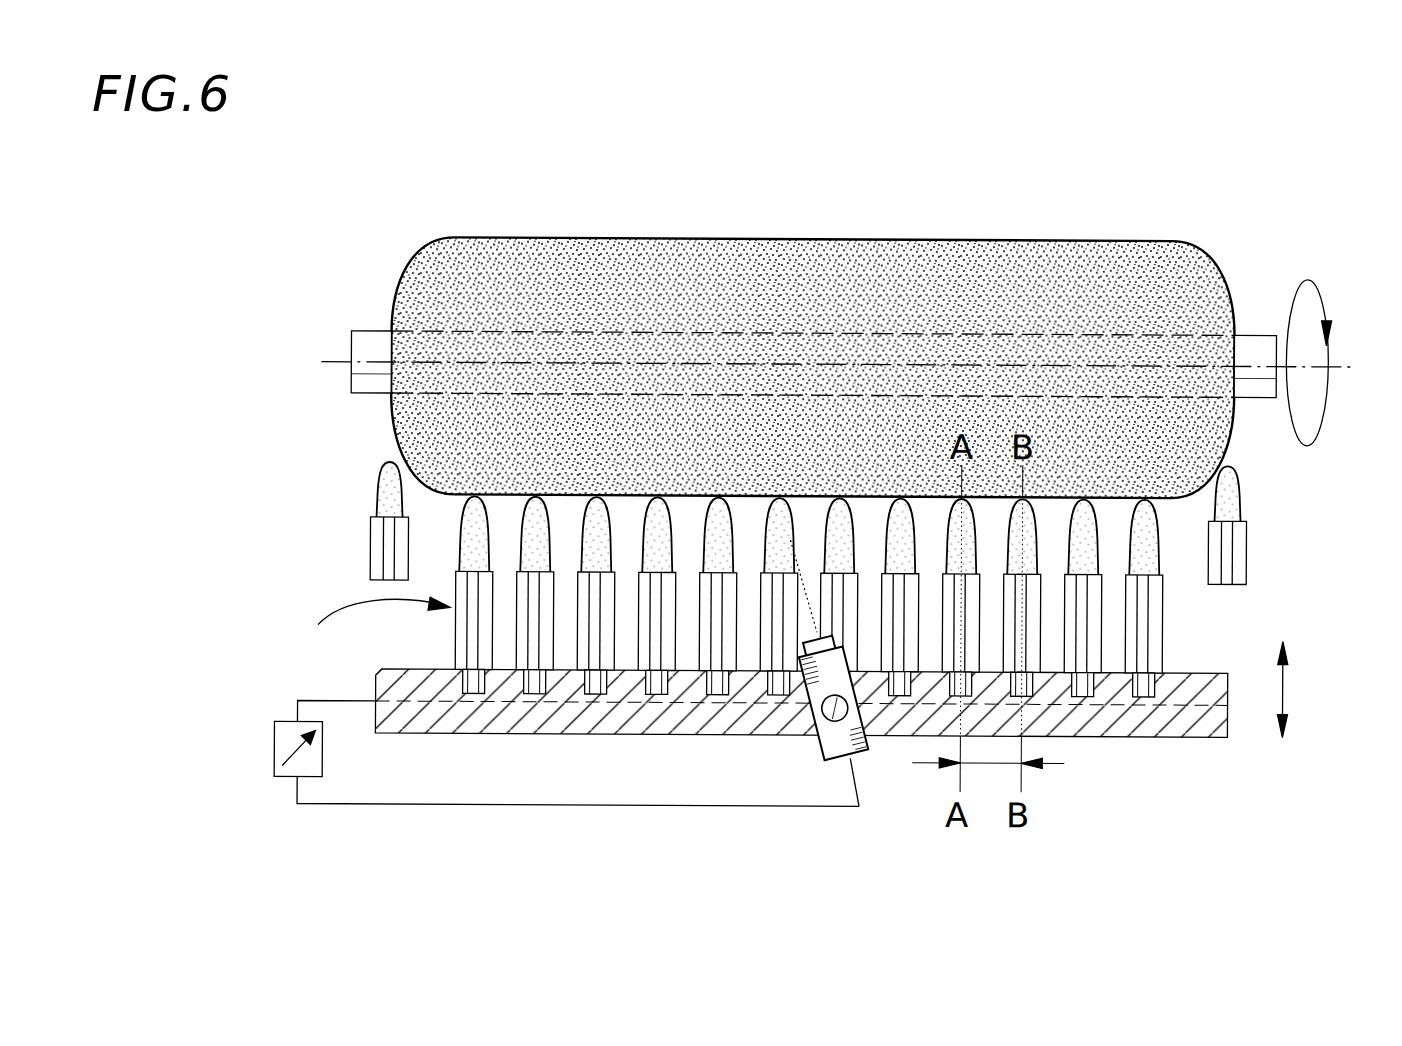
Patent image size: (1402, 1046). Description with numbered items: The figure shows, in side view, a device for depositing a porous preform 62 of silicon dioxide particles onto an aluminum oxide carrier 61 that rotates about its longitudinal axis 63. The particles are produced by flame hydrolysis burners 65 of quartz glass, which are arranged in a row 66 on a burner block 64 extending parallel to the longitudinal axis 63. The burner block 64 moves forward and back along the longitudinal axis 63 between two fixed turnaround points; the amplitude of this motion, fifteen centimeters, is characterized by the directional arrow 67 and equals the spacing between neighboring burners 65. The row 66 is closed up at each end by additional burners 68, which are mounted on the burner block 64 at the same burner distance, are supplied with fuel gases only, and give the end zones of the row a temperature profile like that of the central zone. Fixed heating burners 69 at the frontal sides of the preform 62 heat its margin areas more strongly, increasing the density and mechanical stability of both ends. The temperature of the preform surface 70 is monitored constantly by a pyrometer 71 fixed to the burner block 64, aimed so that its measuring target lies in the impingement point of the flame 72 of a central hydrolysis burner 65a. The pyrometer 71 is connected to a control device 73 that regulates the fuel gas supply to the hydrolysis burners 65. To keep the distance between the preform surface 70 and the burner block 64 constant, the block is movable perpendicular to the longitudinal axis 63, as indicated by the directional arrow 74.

The aluminum oxide carrier 61 is at (375, 330).
The porous preform 62 is at (553, 252).
The longitudinal axis 63 is at (328, 361).
The burner block 64 is at (477, 723).
The flame hydrolysis burners 65 is at (547, 652).
The central hydrolysis burner 65a is at (776, 653).
The row of burners 66 is at (375, 604).
The directional arrow 67 is at (990, 760).
The additional burners 68 is at (472, 640).
The heating burners 69 is at (385, 550).
The preform surface 70 is at (915, 238).
The pyrometer 71 is at (867, 748).
The flame 72 is at (1037, 513).
The control device 73 is at (277, 768).
The directional arrow 74 is at (1285, 685).